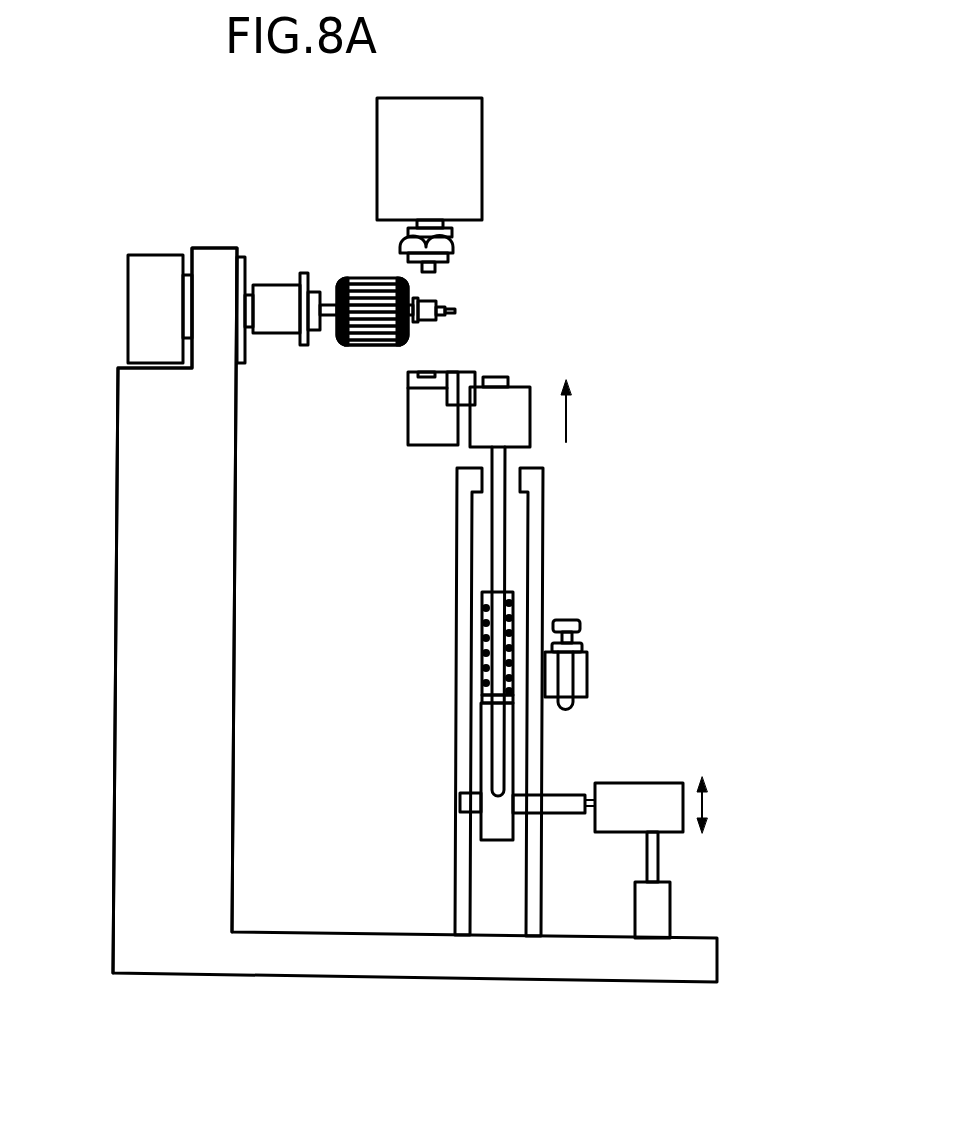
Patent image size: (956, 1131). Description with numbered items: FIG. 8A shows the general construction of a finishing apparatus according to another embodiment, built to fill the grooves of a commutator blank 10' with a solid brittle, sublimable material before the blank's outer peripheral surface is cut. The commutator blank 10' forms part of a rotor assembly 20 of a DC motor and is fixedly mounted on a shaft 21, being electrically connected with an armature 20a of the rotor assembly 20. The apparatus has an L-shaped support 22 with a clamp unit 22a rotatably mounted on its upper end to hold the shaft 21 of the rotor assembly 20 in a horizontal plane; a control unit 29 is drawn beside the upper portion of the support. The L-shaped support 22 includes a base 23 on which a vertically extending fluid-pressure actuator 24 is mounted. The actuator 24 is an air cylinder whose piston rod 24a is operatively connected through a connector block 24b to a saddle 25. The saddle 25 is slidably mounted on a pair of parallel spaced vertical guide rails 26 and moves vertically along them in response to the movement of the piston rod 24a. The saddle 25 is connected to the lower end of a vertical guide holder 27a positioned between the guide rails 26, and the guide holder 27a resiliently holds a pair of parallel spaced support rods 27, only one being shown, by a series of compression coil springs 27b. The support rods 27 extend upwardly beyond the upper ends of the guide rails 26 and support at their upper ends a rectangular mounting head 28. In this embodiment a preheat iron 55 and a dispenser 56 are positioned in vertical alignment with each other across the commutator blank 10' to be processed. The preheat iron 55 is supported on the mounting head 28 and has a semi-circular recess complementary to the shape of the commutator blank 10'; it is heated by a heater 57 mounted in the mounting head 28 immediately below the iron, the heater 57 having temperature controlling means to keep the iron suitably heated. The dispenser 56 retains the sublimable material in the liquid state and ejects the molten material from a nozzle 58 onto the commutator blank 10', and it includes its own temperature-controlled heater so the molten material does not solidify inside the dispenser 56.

The commutator blank 10' is at (462, 296).
The rotor assembly 20 is at (345, 278).
The armature 20a is at (352, 343).
The shaft 21 is at (455, 313).
The L-shaped support 22 is at (233, 565).
The clamp unit 22a is at (272, 283).
The base 23 is at (718, 962).
The fluid-pressure actuator 24 is at (672, 908).
The piston rod 24a is at (658, 862).
The connector block 24b is at (650, 790).
The saddle 25 is at (558, 795).
The guide rails 26 is at (457, 660).
The support rods 27 is at (505, 525).
The guide holder 27a is at (494, 842).
The compression coil springs 27b is at (510, 628).
The mounting head 28 is at (522, 393).
The controller 29 is at (135, 318).
The preheat iron 55 is at (405, 380).
The dispenser 56 is at (482, 152).
The heater 57 is at (415, 428).
The nozzle 58 is at (436, 268).